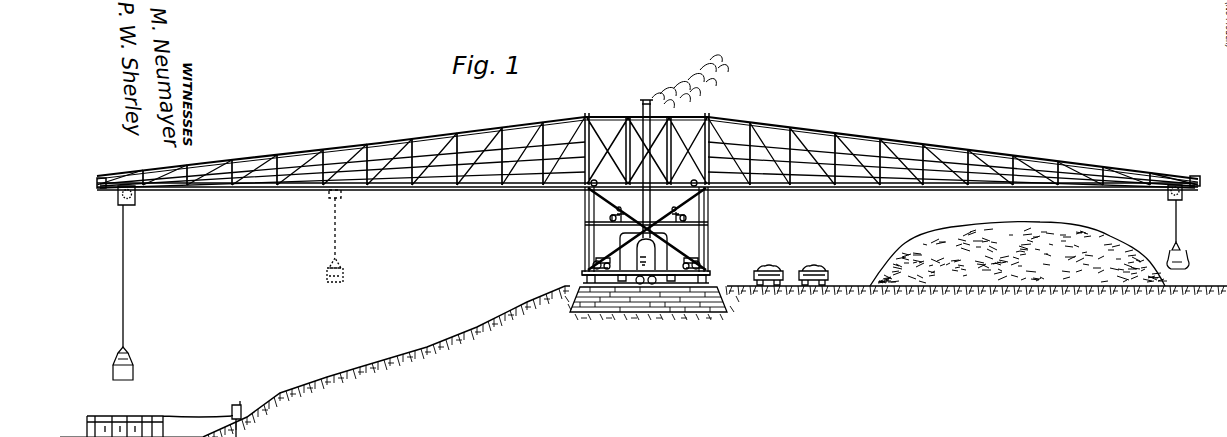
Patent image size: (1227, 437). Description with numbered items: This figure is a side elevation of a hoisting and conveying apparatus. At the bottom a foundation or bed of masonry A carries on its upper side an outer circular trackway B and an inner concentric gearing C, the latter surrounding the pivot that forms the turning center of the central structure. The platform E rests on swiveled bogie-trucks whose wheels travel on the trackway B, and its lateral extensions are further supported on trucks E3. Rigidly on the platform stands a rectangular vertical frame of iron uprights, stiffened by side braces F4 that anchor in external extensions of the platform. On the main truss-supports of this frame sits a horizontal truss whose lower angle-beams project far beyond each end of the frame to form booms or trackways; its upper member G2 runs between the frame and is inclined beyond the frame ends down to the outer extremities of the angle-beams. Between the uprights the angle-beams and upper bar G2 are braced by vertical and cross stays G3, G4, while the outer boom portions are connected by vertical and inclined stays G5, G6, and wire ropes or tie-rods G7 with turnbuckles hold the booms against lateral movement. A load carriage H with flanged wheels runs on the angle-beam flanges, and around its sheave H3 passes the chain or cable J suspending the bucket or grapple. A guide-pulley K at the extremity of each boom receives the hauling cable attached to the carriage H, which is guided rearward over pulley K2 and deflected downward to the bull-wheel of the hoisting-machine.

The foundation or bed of masonry A is at (700, 316).
The outer circular trackway B is at (709, 280).
The inner concentric gearing C is at (661, 280).
The platform E is at (710, 268).
The trucks E3 is at (582, 275).
The side braces F4 is at (659, 192).
The upper member of the truss G2 is at (290, 150).
The vertical stays G3 is at (627, 149).
The cross stays G4 is at (688, 149).
The vertical stays G5 is at (647, 158).
The inclined stays G6 is at (1000, 140).
The wire ropes or tie-rods G7 is at (646, 153).
The load carriage H is at (135, 198).
The sheave H3 is at (130, 206).
The chain or cable J is at (118, 272).
The guide-pulley K is at (102, 190).
The pulley K2 is at (644, 178).